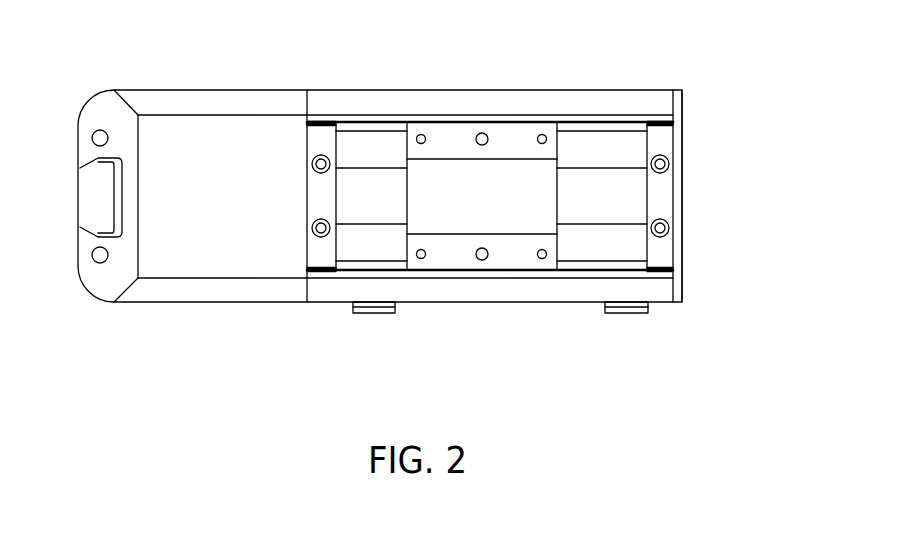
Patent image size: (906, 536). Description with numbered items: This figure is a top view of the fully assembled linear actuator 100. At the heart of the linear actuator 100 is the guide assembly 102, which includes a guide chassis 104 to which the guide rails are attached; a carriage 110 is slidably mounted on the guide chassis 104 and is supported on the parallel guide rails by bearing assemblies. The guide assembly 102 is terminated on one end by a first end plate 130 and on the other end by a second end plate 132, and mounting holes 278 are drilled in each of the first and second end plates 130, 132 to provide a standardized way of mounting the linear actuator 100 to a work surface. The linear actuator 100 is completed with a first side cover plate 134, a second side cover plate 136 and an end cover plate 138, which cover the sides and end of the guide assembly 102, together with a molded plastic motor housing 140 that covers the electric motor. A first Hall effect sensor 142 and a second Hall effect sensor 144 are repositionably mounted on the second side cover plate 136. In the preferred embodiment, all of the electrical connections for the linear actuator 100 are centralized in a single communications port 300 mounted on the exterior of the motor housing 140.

The linear actuator 100 is at (752, 152).
The guide assembly 102 is at (581, 91).
The guide chassis 104 is at (367, 150).
The carriage 110 is at (449, 138).
The first end plate 130 is at (321, 133).
The second end plate 132 is at (667, 132).
The first side cover plate 134 is at (385, 97).
The second side cover plate 136 is at (540, 293).
The end cover plate 138 is at (683, 215).
The motor housing 140 is at (145, 100).
The first Hall effect sensor 142 is at (374, 313).
The second Hall effect sensor 144 is at (628, 313).
The mounting holes 278 is at (311, 163).
The communications port 300 is at (82, 198).